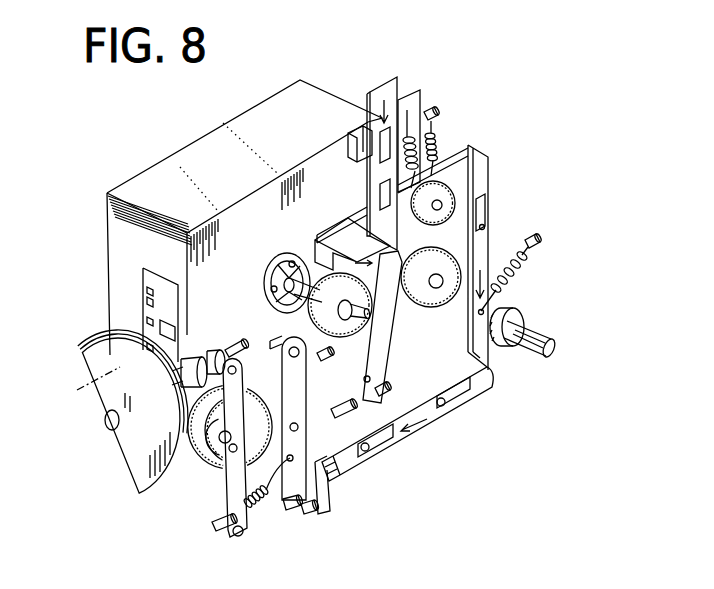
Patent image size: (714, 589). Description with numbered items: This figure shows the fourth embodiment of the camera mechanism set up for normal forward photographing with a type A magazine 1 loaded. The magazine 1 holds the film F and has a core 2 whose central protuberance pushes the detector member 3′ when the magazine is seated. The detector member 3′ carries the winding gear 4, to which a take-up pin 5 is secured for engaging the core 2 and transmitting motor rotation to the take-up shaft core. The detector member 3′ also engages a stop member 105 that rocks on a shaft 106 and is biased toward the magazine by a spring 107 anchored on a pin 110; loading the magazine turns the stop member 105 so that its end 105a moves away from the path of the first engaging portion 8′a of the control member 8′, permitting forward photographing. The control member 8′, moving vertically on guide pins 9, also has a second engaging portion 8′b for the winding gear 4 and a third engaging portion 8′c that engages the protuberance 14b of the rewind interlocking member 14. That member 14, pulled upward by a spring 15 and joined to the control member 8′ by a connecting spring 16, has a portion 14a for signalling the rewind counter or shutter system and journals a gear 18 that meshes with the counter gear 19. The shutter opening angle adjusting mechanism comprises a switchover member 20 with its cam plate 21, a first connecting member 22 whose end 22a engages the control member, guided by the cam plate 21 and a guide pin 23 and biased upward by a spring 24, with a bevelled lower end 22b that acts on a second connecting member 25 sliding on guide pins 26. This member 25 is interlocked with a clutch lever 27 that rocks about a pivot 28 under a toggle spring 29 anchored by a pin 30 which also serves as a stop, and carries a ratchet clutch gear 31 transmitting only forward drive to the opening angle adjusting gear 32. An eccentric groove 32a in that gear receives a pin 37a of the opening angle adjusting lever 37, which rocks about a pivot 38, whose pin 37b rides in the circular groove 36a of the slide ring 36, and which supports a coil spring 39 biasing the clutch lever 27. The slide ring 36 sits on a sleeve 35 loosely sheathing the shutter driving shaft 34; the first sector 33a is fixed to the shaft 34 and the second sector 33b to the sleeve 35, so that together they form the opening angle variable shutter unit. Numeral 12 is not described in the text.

The type A magazine 1 is at (158, 175).
The film F is at (147, 300).
The core 2 is at (275, 280).
The detector member 3′ is at (300, 300).
The winding gear 4 is at (337, 330).
The take-up pin 5 is at (290, 262).
The control member 8′ is at (360, 215).
The first engaging portion 8′a is at (340, 305).
The second engaging portion 8′b is at (330, 252).
The third engaging portion 8′c is at (358, 138).
The guide pins 9 is at (383, 132).
The pin 12 is at (430, 108).
The rewind interlocking member 14 is at (391, 90).
The portion 14a is at (476, 160).
The protuberance 14b is at (364, 158).
The spring 15 is at (434, 138).
The connecting spring 16 is at (408, 137).
The gear 18 is at (442, 212).
The counter gear 19 is at (392, 345).
The switchover member 20 is at (556, 345).
The cam plate 21 is at (505, 343).
The first connecting member 22 is at (487, 243).
The end of first connecting member 22a is at (490, 176).
The lower end 22b is at (468, 362).
The guide pin 23 is at (487, 220).
The spring 24 is at (517, 270).
The second connecting member 25 is at (414, 428).
The guide pins 26 is at (445, 405).
The clutch lever 27 is at (282, 340).
The pivot 28 is at (271, 289).
The toggle spring 29 is at (288, 512).
The pin 30 is at (310, 511).
The clutch gear 31 is at (348, 430).
The opening angle adjusting gear 32 is at (198, 442).
The eccentric groove 32a is at (258, 396).
The first sector 33a is at (97, 365).
The second sector 33b is at (117, 348).
The shutter driving shaft 34 is at (232, 343).
The sleeve 35 is at (183, 380).
The slide ring 36 is at (181, 403).
The circular groove 36a is at (210, 350).
The opening angle adjusting lever 37 is at (232, 500).
The pin 37a is at (222, 462).
The pin 37b is at (232, 354).
The pivot 38 is at (239, 537).
The coil spring 39 is at (262, 508).
The stop member 105 is at (370, 378).
The end of stop member 105a is at (392, 270).
The shaft 106 is at (376, 390).
The spring 107 is at (360, 405).
The pin 110 is at (325, 363).